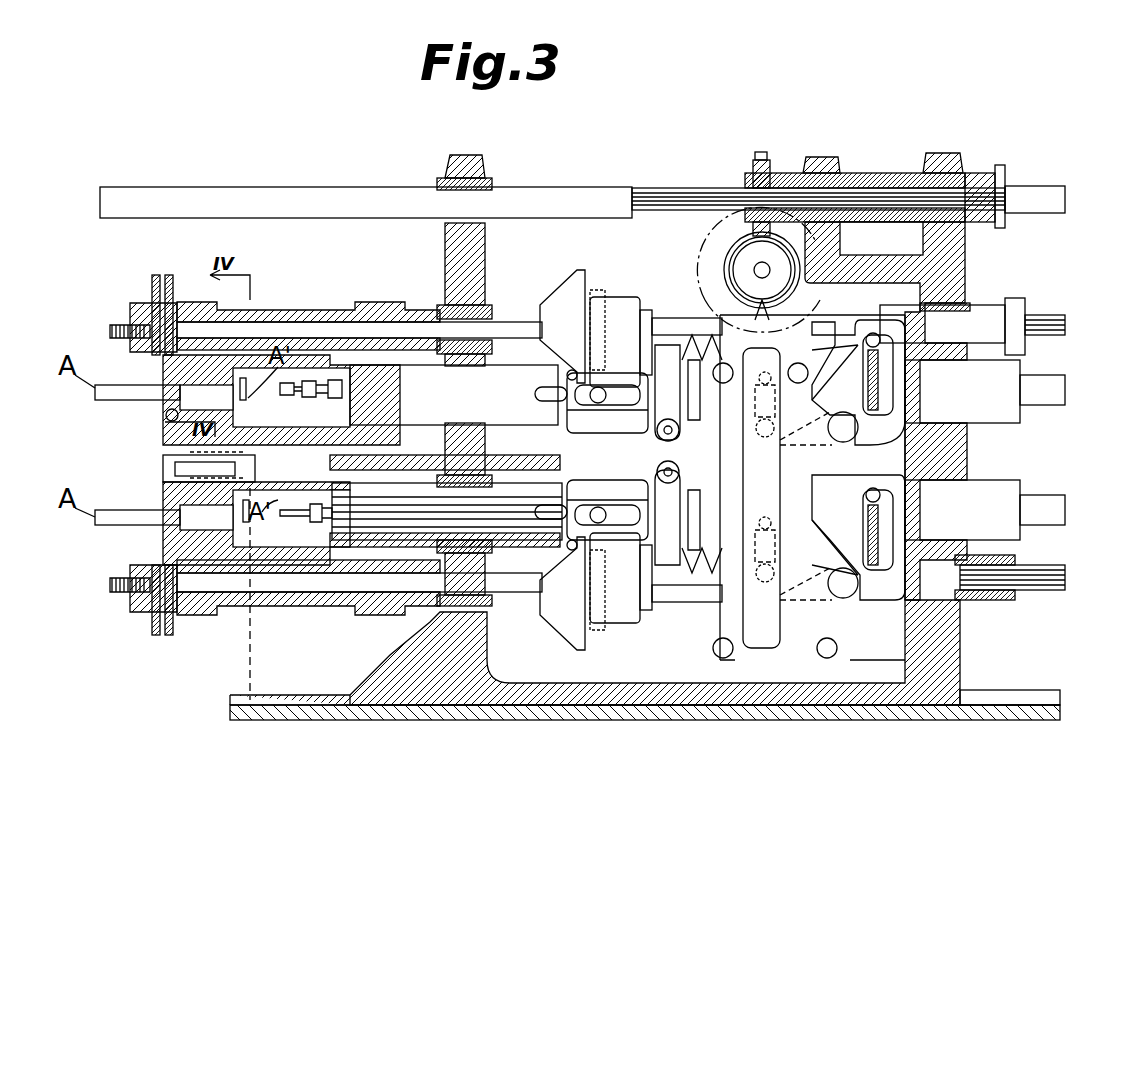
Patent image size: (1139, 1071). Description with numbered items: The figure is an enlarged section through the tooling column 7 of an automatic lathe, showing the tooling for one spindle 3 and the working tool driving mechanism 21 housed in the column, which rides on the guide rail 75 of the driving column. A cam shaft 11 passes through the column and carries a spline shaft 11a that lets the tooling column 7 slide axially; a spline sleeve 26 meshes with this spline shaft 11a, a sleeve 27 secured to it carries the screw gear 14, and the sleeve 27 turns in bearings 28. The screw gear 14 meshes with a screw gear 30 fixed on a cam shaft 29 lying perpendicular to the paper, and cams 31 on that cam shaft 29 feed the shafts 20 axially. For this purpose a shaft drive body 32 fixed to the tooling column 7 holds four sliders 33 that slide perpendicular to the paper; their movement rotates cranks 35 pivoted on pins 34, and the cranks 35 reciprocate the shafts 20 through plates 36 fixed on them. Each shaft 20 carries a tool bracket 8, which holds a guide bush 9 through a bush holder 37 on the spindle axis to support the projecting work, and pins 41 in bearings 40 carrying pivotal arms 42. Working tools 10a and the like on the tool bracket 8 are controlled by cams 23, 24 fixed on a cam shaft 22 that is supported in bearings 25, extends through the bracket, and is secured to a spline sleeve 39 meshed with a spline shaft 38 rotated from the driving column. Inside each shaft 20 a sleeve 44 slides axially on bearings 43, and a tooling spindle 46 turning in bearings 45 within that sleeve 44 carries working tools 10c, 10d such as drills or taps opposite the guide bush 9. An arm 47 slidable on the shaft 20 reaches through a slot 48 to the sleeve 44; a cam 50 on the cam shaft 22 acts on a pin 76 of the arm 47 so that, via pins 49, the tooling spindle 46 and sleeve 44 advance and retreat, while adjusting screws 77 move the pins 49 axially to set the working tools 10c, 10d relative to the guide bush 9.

The spindle 3 is at (1057, 712).
The tooling column 7 is at (963, 275).
The tool bracket 8 is at (308, 304).
The guide bush 9 is at (180, 414).
The working tool 10a is at (291, 594).
The working tool 10c is at (328, 515).
The working tool 10d is at (300, 385).
The cam shaft 11 is at (292, 190).
The spline shaft 11a is at (680, 192).
The screw gear 14 is at (761, 152).
The shaft 20 is at (416, 324).
The working tool driving mechanism 21 is at (672, 605).
The cam shaft 22 is at (393, 318).
The cam 23 is at (170, 278).
The cam 24 is at (155, 278).
The bearing 25 is at (495, 314).
The spline sleeve 26 is at (1002, 186).
The sleeve 27 is at (885, 173).
The bearing 28 is at (842, 173).
The cam shaft 29 is at (755, 265).
The screw gear 30 is at (730, 272).
The cam 31 is at (712, 298).
The shaft drive body 32 is at (797, 665).
The slider 33 is at (745, 637).
The pin 34 is at (840, 427).
The crank 35 is at (940, 440).
The plate 36 is at (822, 336).
The bush holder 37 is at (180, 392).
The spline shaft 38 is at (1050, 318).
The spline sleeve 39 is at (1020, 570).
The bearing 40 is at (163, 466).
The pin 41 is at (175, 476).
The pivotal arm 42 is at (195, 458).
The bearing 43 is at (510, 488).
The sleeve 44 is at (345, 392).
The bearing 45 is at (425, 472).
The tooling spindle 46 is at (325, 506).
The arm 47 is at (625, 463).
The slot 48 is at (535, 394).
The pin 49 is at (604, 328).
The cam 50 is at (565, 298).
The guide rail 75 is at (982, 700).
The pin 76 is at (565, 373).
The adjusting screw 77 is at (660, 395).